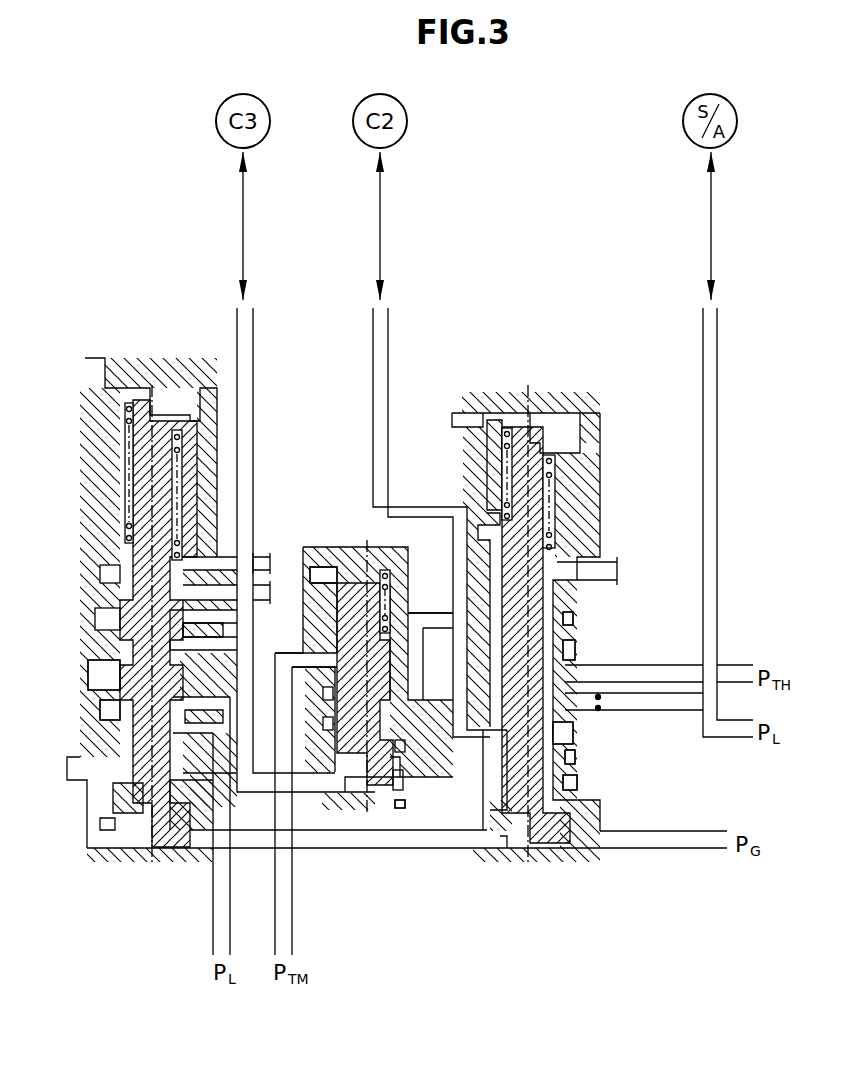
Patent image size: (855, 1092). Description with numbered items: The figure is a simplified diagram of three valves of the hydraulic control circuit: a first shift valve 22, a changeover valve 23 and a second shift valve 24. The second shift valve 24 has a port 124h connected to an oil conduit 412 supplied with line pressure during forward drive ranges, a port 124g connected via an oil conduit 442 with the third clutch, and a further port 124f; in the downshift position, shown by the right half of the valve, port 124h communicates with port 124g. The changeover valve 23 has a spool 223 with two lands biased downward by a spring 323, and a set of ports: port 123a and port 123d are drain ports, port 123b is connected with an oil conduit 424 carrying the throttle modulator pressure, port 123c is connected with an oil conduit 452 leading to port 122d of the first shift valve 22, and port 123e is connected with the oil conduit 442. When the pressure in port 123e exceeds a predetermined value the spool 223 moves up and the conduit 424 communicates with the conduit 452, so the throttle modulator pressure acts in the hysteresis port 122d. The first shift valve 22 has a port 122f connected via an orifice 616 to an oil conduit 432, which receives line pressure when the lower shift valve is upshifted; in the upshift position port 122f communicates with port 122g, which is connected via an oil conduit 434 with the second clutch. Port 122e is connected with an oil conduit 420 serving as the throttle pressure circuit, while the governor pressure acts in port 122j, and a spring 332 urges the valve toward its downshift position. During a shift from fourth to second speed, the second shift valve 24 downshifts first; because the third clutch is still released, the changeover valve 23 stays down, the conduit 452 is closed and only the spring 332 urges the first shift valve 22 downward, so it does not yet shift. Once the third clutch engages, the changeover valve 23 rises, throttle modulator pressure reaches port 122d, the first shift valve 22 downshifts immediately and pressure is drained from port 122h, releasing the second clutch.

The 3-4 shift valve 24 is at (150, 376).
The 4-3-2 changeover valve 23 is at (334, 546).
The 2-3 shift valve 22 is at (553, 407).
The oil conduit 442 is at (254, 326).
The oil conduit 434 is at (390, 348).
The oil conduit 432 is at (702, 508).
The oil conduit 420 is at (732, 664).
The oil conduit 412 is at (212, 896).
The oil conduit 424 is at (294, 904).
The spool 223 is at (347, 770).
The spring 323 is at (406, 572).
The spring 332 is at (554, 470).
The oil conduit 452 is at (433, 613).
The orifice 616 is at (603, 700).
The port 123a is at (316, 570).
The port 123b is at (293, 655).
The port 123c is at (403, 746).
The port 123d is at (405, 778).
The port 123e is at (395, 803).
The port 124f is at (180, 662).
The port 124g is at (106, 716).
The port 124h is at (110, 736).
The port 122d is at (570, 618).
The port 122e is at (572, 660).
The port 122f is at (578, 730).
The port 122g is at (578, 756).
The port 122h is at (579, 782).
The port 122j is at (505, 842).